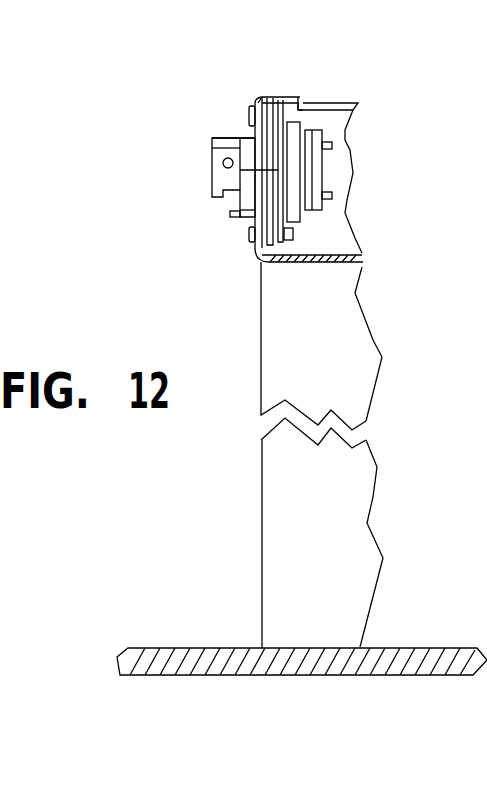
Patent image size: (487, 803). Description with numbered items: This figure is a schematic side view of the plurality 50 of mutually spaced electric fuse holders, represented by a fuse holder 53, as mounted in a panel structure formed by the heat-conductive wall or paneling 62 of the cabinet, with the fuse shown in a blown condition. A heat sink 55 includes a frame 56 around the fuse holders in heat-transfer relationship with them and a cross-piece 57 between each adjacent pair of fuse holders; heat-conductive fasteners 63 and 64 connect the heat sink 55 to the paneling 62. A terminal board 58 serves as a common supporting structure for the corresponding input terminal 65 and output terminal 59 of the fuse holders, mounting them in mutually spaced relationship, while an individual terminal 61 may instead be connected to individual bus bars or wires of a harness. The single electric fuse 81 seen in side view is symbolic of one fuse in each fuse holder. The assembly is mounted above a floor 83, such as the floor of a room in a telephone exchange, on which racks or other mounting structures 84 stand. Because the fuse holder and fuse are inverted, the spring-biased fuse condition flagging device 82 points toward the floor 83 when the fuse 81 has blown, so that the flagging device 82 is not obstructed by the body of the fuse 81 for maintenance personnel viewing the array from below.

The plurality of mutually spaced electric fuse holders 50 is at (220, 137).
The electric fuse holder 53 is at (248, 197).
The heat sink 55 is at (292, 98).
The frame 56 is at (333, 103).
The cross-piece 57 is at (240, 171).
The terminal board 58 is at (320, 165).
The output terminal 59 is at (325, 148).
The individual terminal 61 is at (355, 240).
The heat-conductive wall or paneling 62 is at (259, 98).
The heat-conductive fastener 63 is at (250, 112).
The heat-conductive fastener 64 is at (251, 243).
The input terminal 65 is at (322, 195).
The electric fuse 81 is at (211, 157).
The spring-biased fuse condition flagging device 82 is at (233, 213).
The floor 83 is at (210, 650).
The rack 84 is at (283, 365).